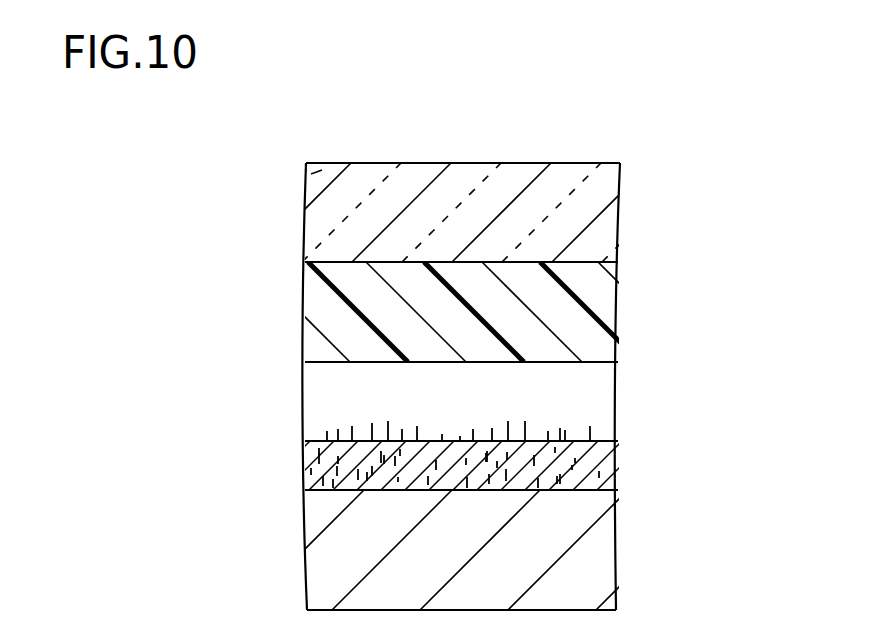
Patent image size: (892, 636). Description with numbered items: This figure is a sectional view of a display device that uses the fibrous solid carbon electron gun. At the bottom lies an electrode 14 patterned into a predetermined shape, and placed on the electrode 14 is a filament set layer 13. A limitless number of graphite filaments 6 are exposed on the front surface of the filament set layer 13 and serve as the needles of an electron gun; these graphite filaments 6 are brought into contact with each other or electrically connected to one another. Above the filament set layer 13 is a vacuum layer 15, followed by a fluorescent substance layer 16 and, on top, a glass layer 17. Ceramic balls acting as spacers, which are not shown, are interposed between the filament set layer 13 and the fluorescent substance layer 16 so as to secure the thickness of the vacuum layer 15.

The graphite filaments 6 is at (547, 437).
The filament set layer 13 is at (604, 465).
The electrode 14 is at (598, 553).
The vacuum layer 15 is at (323, 398).
The fluorescent substance layer 16 is at (323, 312).
The glass layer 17 is at (323, 211).